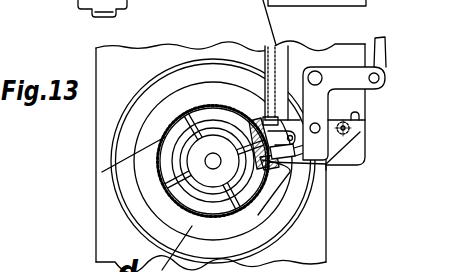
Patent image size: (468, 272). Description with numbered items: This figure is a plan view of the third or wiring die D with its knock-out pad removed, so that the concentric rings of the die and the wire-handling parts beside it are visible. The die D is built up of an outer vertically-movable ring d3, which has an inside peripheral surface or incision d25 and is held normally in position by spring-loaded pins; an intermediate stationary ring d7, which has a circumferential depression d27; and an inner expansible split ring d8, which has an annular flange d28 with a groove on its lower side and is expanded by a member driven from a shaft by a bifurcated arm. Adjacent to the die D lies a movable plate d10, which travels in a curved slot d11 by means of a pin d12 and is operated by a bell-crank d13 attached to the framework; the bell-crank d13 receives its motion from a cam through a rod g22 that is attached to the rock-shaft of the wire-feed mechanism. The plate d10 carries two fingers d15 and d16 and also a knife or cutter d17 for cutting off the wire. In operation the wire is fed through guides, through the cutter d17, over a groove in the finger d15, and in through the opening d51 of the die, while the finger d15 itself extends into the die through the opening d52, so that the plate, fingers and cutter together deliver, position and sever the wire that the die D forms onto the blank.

The die D is at (300, 197).
The outer vertically-movable ring d3 is at (130, 170).
The intermediate stationary ring d7 is at (157, 127).
The inner expansible split ring d8 is at (212, 132).
The movable plate d10 is at (351, 130).
The curved slot d11 is at (361, 114).
The pin d12 is at (362, 140).
The bell-crank d13 is at (338, 72).
The finger d15 is at (328, 166).
The finger d16 is at (272, 158).
The knife or cutter d17 is at (290, 113).
The inside peripheral surface or incision d25 is at (114, 219).
The circumferential depression d27 is at (150, 152).
The annular flange d28 is at (197, 133).
The opening d51 is at (293, 142).
The opening d52 is at (250, 113).
The rod g22 is at (409, 52).